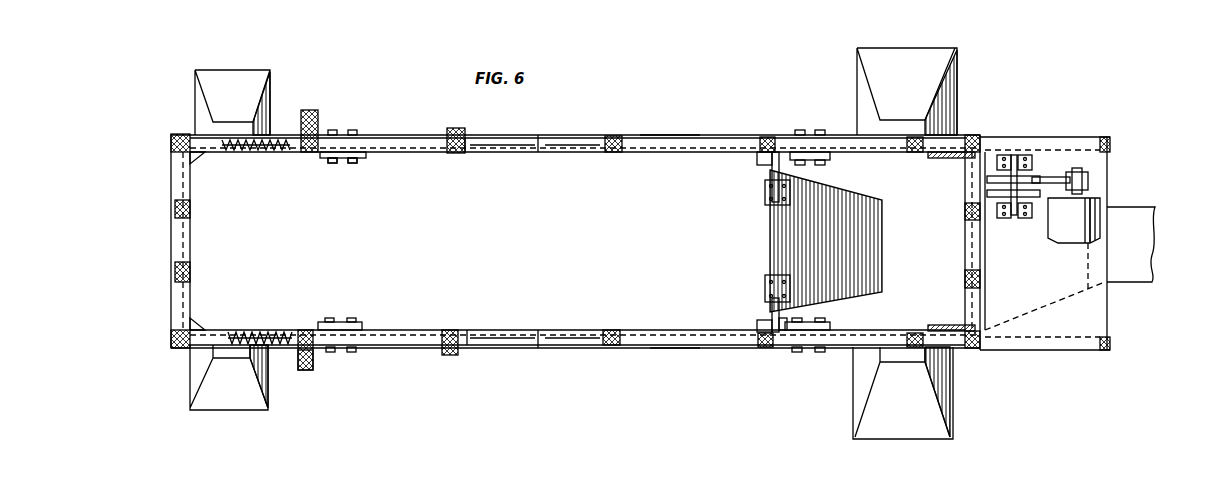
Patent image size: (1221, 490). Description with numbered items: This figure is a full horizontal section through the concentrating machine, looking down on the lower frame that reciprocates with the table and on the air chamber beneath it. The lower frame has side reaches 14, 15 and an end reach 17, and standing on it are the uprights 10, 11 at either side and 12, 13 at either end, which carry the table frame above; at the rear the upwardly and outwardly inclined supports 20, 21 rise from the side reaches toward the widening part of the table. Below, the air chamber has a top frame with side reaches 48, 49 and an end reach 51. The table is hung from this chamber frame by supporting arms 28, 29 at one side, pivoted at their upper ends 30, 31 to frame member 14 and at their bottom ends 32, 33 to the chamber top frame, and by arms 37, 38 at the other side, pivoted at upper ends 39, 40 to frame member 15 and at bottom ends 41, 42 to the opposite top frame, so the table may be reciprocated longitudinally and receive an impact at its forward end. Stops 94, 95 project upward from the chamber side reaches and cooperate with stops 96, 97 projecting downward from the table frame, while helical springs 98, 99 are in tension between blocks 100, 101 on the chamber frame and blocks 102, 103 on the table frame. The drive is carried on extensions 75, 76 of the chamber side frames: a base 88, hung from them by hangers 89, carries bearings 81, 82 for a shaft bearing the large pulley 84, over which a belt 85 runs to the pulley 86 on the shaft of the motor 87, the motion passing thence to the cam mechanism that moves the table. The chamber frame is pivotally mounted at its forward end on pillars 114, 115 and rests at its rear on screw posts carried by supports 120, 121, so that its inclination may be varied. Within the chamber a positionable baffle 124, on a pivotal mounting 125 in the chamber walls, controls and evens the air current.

The upright 10 is at (768, 137).
The upright 11 is at (765, 347).
The upright 12 is at (968, 211).
The upright 13 is at (190, 208).
The side reach 14 is at (698, 138).
The side reach 15 is at (702, 348).
The end reach 17 is at (188, 248).
The support 20 is at (310, 110).
The support 21 is at (313, 360).
The supporting arm 28 is at (340, 165).
The supporting arm 29 is at (812, 162).
The upper end 30 is at (802, 130).
The upper end 31 is at (330, 165).
The bottom end 32 is at (821, 130).
The bottom end 33 is at (355, 162).
The arm 37 is at (340, 322).
The arm 38 is at (795, 320).
The upper end 39 is at (328, 318).
The upper end 40 is at (782, 320).
The bottom end 41 is at (354, 320).
The bottom end 42 is at (812, 325).
The side reach 48 is at (660, 135).
The side reach 49 is at (672, 348).
The end reach 51 is at (172, 272).
The extension 75 is at (990, 140).
The extension 76 is at (990, 348).
The bearing 81 is at (1012, 155).
The bearing 82 is at (1005, 220).
The large pulley 84 is at (1025, 176).
The belt 85 is at (1062, 172).
The pulley 86 is at (1082, 198).
The motor 87 is at (1104, 205).
The base 88 is at (1088, 316).
The hanger 89 is at (1112, 145).
The stop 94 is at (582, 146).
The stop 95 is at (565, 346).
The stop 96 is at (512, 146).
The stop 97 is at (512, 346).
The helical spring 98 is at (278, 152).
The helical spring 99 is at (262, 330).
The block 100 is at (225, 150).
The block 101 is at (220, 328).
The block 102 is at (330, 140).
The block 103 is at (298, 360).
The pillar 114 is at (872, 68).
The pillar 115 is at (865, 388).
The support 120 is at (246, 52).
The support 121 is at (242, 400).
The baffle 124 is at (866, 246).
The pivotal mounting 125 is at (764, 172).